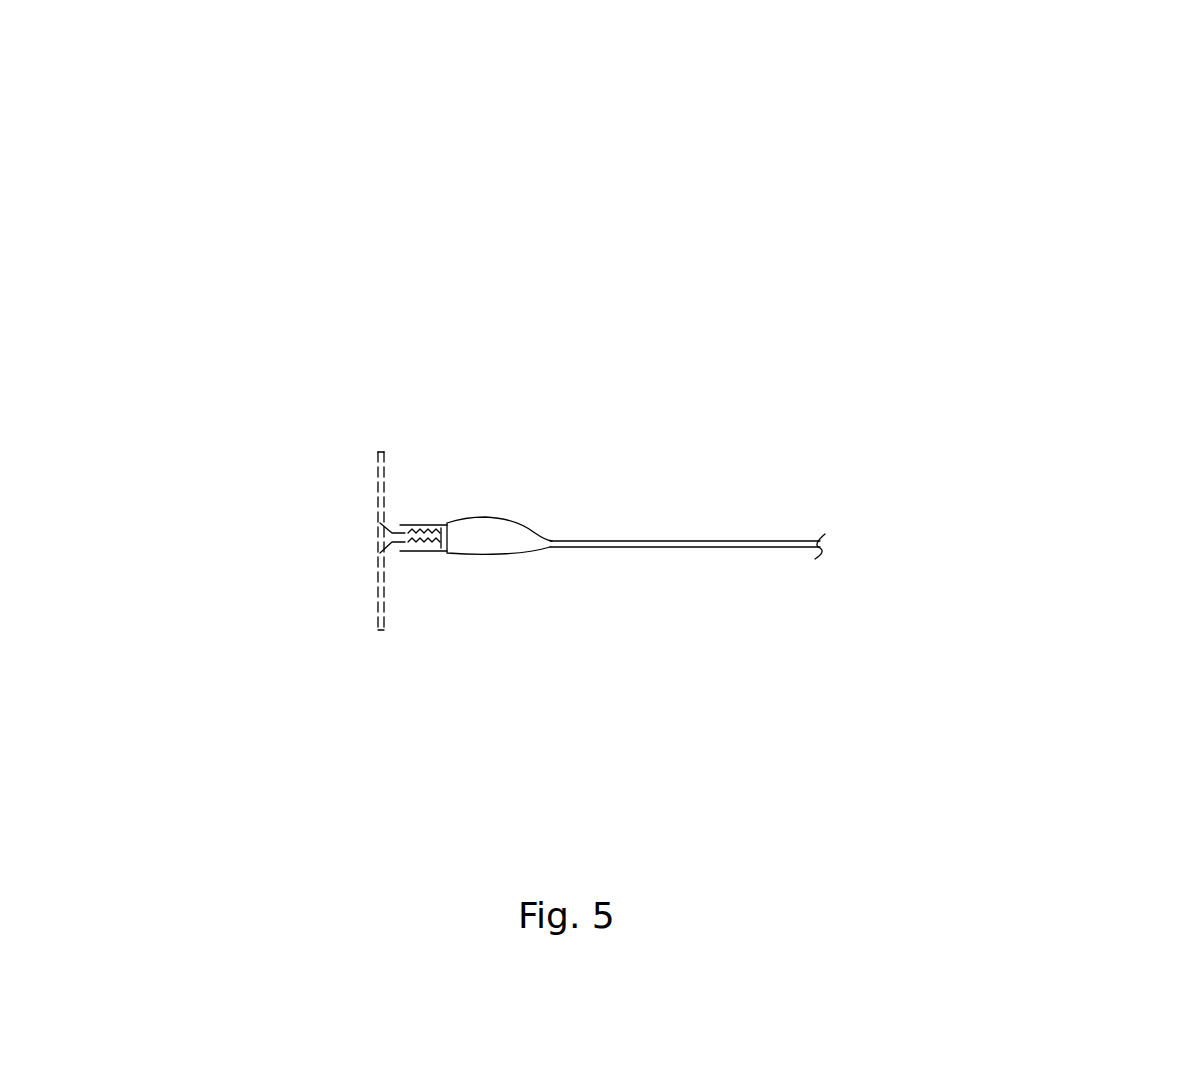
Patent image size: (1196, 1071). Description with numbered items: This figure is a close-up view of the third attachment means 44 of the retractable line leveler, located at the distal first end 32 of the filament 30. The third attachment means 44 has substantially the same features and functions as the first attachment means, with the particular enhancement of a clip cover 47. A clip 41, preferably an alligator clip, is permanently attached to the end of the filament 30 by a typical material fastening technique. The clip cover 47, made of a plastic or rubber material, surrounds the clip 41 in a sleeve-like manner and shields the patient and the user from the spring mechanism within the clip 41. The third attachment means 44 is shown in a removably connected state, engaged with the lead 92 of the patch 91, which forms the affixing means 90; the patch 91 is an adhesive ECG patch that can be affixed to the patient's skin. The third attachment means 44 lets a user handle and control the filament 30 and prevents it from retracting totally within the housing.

The third attachment means 44 is at (1090, 208).
The affixing means 90 is at (345, 562).
The distal first end 32 is at (777, 587).
The patch 91 is at (385, 620).
The lead 92 is at (402, 546).
The clip 41 is at (418, 524).
The clip cover 47 is at (498, 538).
The filament 30 is at (678, 538).